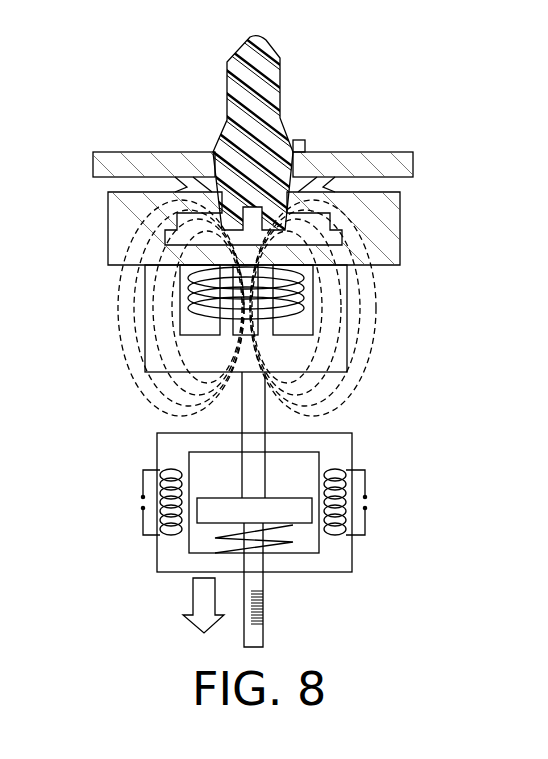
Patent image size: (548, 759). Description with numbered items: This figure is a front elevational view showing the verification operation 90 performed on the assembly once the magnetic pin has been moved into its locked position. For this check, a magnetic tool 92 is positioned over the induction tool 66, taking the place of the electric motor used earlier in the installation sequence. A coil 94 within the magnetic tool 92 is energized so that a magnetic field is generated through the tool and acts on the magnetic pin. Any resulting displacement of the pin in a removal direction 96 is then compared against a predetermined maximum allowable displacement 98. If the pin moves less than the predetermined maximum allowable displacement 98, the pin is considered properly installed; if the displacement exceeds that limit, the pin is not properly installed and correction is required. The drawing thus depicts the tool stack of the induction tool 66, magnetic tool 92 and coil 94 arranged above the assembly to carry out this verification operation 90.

The verification operation 90 is at (308, 68).
The induction tool 66 is at (203, 353).
The magnetic tool 92 is at (333, 452).
The coil 94 is at (340, 470).
The removal direction 96 is at (203, 598).
The predetermined maximum allowable displacement 98 is at (281, 603).